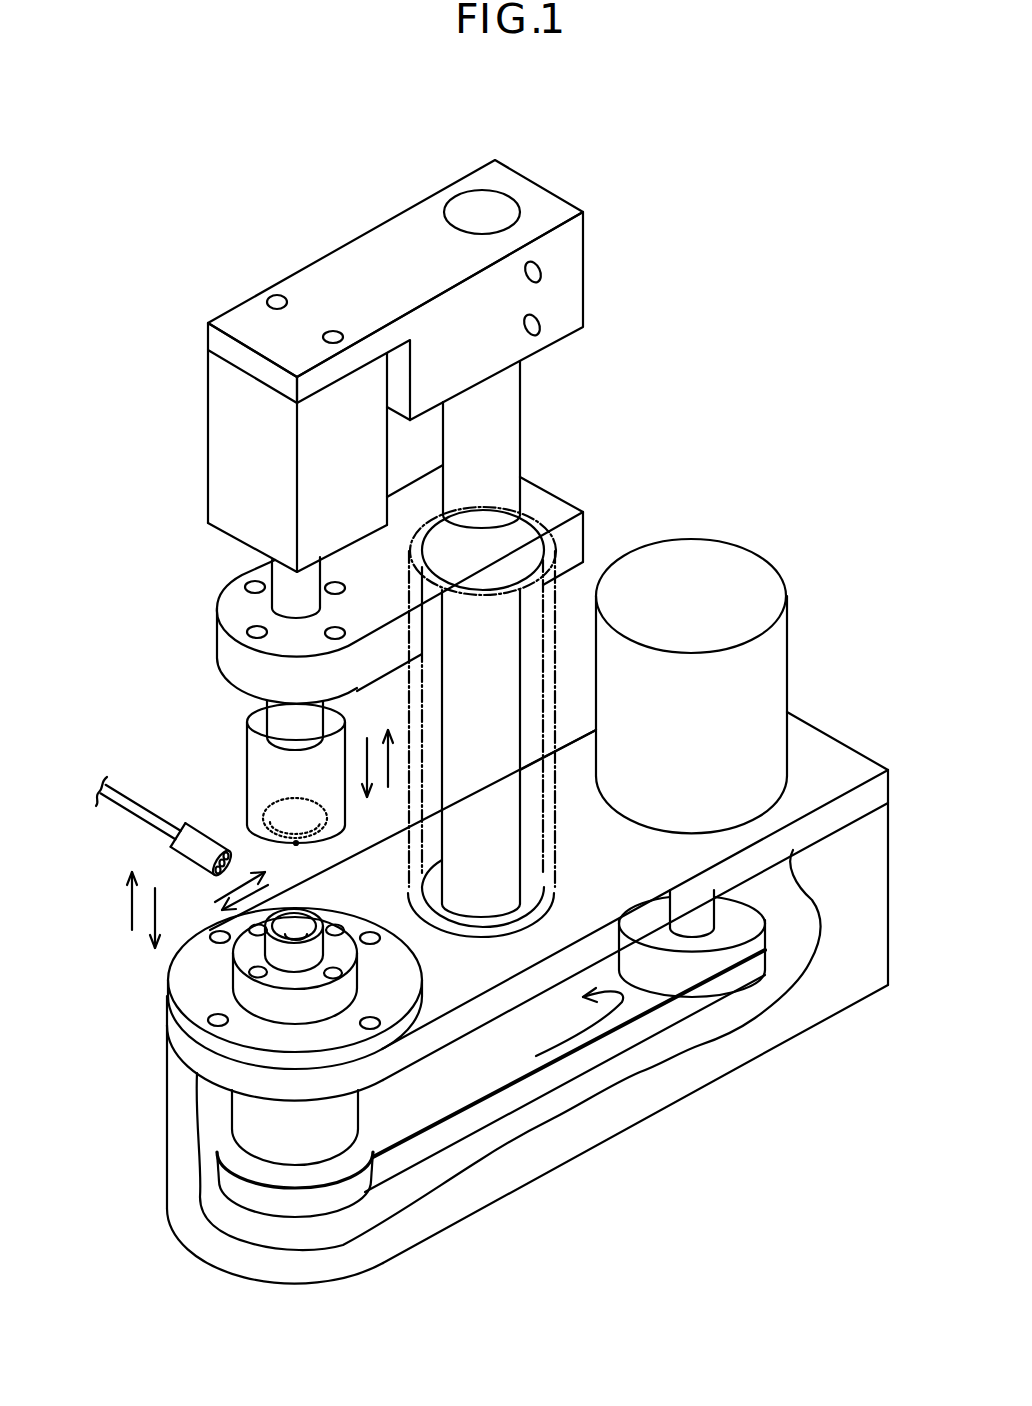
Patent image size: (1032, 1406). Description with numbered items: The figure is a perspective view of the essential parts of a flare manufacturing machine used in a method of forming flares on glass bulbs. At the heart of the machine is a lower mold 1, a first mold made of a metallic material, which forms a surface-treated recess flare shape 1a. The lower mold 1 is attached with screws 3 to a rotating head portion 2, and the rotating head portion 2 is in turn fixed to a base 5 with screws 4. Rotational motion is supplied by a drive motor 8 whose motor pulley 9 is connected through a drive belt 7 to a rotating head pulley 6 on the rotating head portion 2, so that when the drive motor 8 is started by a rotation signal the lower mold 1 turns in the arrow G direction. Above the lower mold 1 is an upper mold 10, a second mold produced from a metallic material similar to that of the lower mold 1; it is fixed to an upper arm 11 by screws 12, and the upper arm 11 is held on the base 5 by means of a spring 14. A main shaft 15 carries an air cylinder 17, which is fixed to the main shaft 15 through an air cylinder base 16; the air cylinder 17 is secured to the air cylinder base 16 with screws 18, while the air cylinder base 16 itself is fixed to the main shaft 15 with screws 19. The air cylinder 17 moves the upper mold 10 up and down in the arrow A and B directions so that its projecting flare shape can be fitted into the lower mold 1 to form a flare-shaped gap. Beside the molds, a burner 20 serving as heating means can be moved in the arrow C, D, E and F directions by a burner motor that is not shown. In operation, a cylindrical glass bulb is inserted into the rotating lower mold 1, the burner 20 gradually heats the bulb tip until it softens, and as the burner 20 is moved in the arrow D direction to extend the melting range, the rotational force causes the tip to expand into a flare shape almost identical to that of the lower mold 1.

The lower mold 1 is at (308, 955).
The recess flare shape 1a is at (323, 907).
The rotating head portion 2 is at (243, 1120).
The screws 3 is at (334, 972).
The screws 4 is at (210, 1020).
The base 5 is at (827, 763).
The rotating head pulley 6 is at (257, 1165).
The drive belt 7 is at (590, 1059).
The drive motor 8 is at (753, 582).
The motor pulley 9 is at (733, 937).
The upper mold 10 is at (254, 786).
The upper arm 11 is at (551, 508).
The screws 12 is at (246, 636).
The spring 14 is at (553, 826).
The main shaft 15 is at (500, 443).
The air cylinder base 16 is at (537, 200).
The air cylinder 17 is at (216, 420).
The screws 18 is at (266, 294).
The screws 19 is at (546, 272).
The burner 20 is at (147, 818).
The arrow A direction A is at (364, 787).
The arrow B direction B is at (393, 738).
The arrow C direction C is at (124, 924).
The arrow D direction D is at (153, 939).
The arrow E direction E is at (250, 874).
The arrow F direction F is at (230, 912).
The arrow G direction G is at (579, 1022).